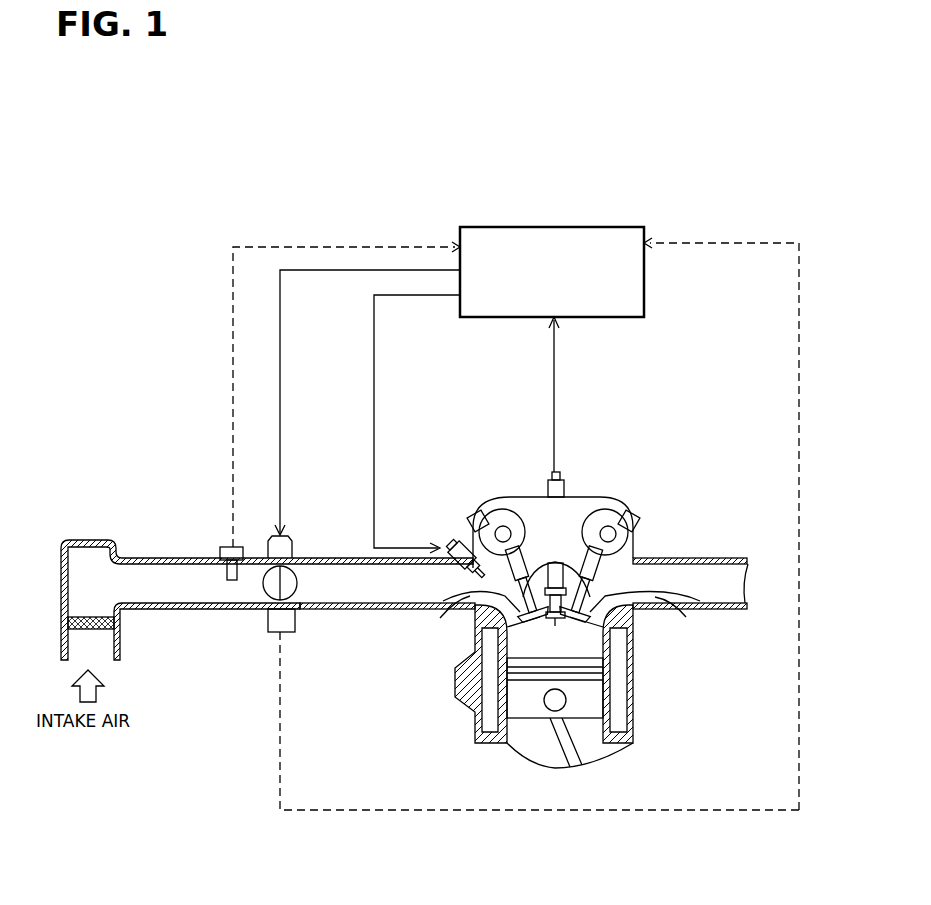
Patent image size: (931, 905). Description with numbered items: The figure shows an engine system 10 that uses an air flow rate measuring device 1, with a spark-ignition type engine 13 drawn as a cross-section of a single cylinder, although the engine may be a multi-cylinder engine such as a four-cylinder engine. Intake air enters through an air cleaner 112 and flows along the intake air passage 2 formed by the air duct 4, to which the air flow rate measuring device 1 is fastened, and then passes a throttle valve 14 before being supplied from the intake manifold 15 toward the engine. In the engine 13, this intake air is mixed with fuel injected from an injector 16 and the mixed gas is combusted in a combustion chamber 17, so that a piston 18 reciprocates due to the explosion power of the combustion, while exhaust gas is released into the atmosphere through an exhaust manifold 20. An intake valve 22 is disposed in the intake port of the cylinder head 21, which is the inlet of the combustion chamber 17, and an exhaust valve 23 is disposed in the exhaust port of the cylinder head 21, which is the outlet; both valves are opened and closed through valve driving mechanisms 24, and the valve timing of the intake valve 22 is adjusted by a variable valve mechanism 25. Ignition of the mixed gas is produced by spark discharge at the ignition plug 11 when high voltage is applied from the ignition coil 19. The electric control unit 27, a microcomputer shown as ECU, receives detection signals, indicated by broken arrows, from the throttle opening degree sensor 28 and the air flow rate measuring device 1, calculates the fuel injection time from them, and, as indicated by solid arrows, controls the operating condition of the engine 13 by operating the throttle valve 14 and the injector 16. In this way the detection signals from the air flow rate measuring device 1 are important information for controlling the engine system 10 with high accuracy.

The air flow rate measuring device 1 is at (228, 547).
The intake air passage 2 is at (175, 583).
The air duct 4 is at (208, 607).
The engine system 10 is at (163, 395).
The ignition plug 11 is at (575, 640).
The engine 13 is at (523, 493).
The throttle valve 14 is at (293, 583).
The intake manifold 15 is at (372, 609).
The injector 16 is at (452, 540).
The combustion chamber 17 is at (600, 648).
The piston 18 is at (590, 697).
The ignition coil 19 is at (565, 480).
The exhaust manifold 20 is at (718, 610).
The cylinder head 21 is at (597, 497).
The intake valve 22 is at (445, 620).
The exhaust valve 23 is at (681, 618).
The valve driving mechanisms 24 is at (483, 515).
The variable valve mechanism 25 is at (500, 518).
The electric control unit 27 is at (608, 317).
The throttle opening degree sensor 28 is at (268, 625).
The air cleaner 112 is at (88, 617).